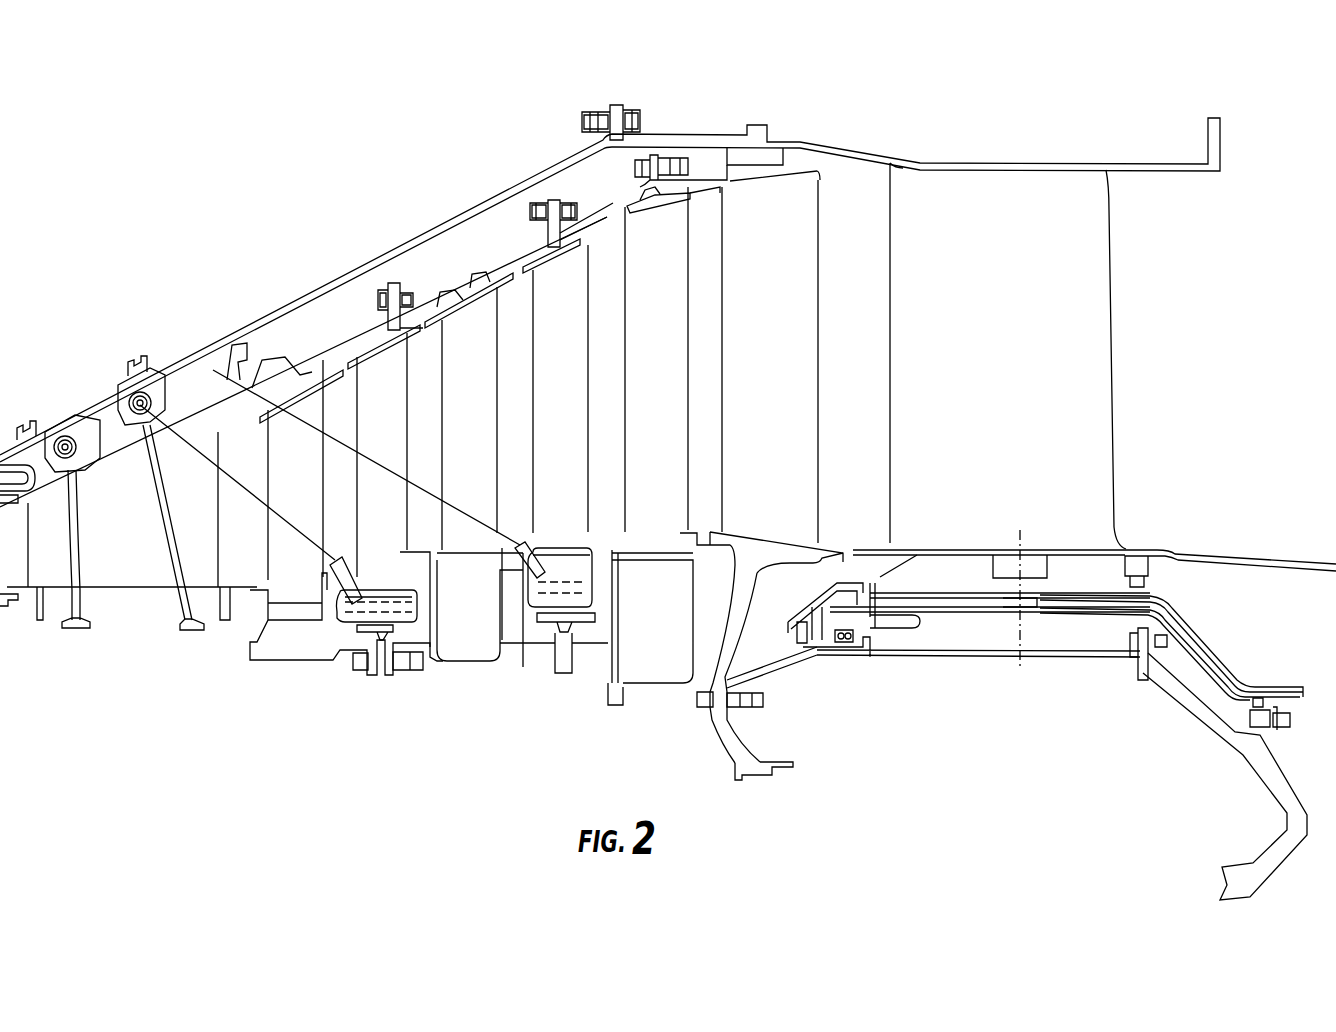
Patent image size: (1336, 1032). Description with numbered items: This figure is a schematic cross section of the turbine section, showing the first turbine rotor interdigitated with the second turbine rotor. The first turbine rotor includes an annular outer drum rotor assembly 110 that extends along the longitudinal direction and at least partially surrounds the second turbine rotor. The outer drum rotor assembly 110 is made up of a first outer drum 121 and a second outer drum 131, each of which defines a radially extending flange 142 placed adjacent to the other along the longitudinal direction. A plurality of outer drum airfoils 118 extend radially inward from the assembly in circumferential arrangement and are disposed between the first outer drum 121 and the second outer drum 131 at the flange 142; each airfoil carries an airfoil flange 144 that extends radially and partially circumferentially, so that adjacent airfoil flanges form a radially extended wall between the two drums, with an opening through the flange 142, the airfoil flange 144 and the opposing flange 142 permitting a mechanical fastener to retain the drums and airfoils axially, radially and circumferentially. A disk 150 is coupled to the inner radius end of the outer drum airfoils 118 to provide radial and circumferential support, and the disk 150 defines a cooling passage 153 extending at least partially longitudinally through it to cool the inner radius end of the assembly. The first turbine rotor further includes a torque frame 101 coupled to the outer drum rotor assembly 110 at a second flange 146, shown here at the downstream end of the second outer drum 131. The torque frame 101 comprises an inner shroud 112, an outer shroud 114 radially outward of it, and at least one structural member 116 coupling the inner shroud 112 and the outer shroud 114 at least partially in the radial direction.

The torque frame 101 is at (832, 228).
The outer drum rotor assembly 110 is at (495, 232).
The inner shroud 112 is at (780, 557).
The outer shroud 114 is at (776, 142).
The structural member 116 is at (791, 389).
The outer drum airfoils 118 is at (403, 445).
The first outer drum 121 is at (397, 285).
The second outer drum 131 is at (567, 199).
The flange 142 is at (380, 313).
The airfoil flange 144 is at (378, 312).
The second flange 146 is at (656, 153).
The disk 150 is at (136, 403).
The cooling passage 153 is at (340, 592).